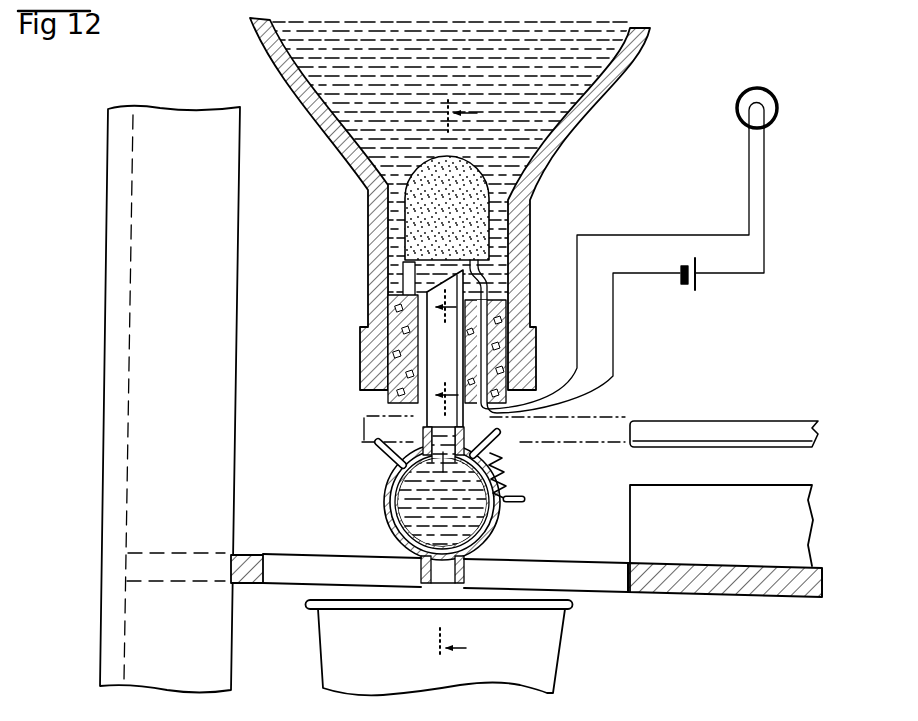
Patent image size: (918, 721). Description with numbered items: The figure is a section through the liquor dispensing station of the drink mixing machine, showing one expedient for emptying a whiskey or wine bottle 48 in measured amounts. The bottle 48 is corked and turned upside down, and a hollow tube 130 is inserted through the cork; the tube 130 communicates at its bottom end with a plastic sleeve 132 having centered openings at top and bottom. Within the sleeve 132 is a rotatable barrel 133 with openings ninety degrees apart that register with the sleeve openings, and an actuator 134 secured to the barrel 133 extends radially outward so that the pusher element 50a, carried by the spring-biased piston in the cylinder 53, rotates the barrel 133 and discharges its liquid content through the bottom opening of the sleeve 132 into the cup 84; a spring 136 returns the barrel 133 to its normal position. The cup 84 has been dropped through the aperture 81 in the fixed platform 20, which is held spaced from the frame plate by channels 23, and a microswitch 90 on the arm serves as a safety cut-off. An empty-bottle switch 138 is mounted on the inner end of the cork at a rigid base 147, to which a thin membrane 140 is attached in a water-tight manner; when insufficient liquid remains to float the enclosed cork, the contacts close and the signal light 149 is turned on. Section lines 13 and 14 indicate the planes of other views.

The channel 23 is at (115, 165).
The whiskey and wine bottle 48 is at (307, 100).
The switch 138 is at (411, 159).
The section line 14 is at (469, 220).
The section line 13 is at (463, 513).
The thin membrane 140 is at (463, 173).
The rigid base 147 is at (410, 275).
The tube 130 is at (433, 348).
The signal light 149 is at (759, 91).
The pusher element 50a is at (363, 426).
The plastic sleeve 132 is at (488, 528).
The rotatable barrel 133 is at (404, 527).
The microswitch 90 is at (400, 492).
The actuator 134 is at (380, 453).
The spring 136 is at (508, 470).
The aperture 81 is at (264, 568).
The fixed platform 20 is at (728, 580).
The cylinder 53 is at (762, 497).
The cup 84 is at (553, 638).